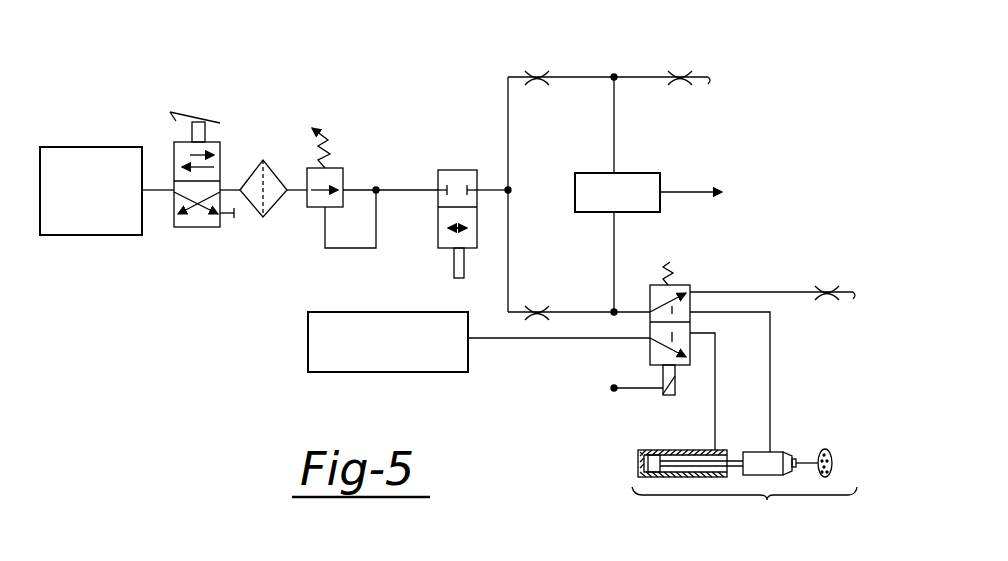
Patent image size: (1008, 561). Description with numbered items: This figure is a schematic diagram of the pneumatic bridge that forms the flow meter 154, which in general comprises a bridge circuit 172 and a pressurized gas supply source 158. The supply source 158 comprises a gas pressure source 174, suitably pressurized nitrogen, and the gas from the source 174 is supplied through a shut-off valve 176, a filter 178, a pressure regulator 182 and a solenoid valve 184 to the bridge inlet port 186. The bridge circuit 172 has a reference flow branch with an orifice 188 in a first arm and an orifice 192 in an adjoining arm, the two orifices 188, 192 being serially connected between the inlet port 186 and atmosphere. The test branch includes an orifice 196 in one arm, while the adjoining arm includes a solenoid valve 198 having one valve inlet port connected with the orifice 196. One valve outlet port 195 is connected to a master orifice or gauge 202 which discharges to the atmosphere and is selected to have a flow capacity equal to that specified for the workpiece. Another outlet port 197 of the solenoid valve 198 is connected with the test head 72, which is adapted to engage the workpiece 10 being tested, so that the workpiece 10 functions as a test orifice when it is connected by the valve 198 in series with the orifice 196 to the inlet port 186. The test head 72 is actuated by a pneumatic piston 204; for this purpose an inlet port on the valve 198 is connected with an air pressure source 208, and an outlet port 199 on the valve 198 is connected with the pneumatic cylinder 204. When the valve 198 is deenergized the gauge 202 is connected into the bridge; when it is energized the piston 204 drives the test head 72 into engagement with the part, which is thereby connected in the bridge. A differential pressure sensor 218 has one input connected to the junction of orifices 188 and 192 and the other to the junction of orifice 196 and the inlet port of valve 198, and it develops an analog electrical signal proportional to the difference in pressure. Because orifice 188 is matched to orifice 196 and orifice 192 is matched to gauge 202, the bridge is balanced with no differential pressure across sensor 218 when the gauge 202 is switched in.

The workpiece 10 is at (832, 452).
The test head 72 is at (747, 452).
The flow meter 154 is at (329, 96).
The pressurized gas supply source 158 is at (211, 272).
The bridge circuit 172 is at (643, 54).
The gas pressure source 174 is at (76, 235).
The shut-off valve 176 is at (176, 140).
The filter 178 is at (265, 160).
The pressure regulator 182 is at (310, 212).
The solenoid valve 184 is at (437, 212).
The bridge inlet port 186 is at (509, 191).
The orifice 188 is at (543, 66).
The orifice 192 is at (684, 70).
The valve outlet port 195 is at (690, 292).
The orifice 196 is at (538, 305).
The outlet port 197 is at (693, 312).
The solenoid valve 198 is at (683, 284).
The outlet port 199 is at (693, 333).
The master orifice or gauge 202 is at (823, 303).
The pneumatic piston 204 is at (660, 450).
The air pressure source 208 is at (390, 372).
The differential pressure sensor 218 is at (648, 173).